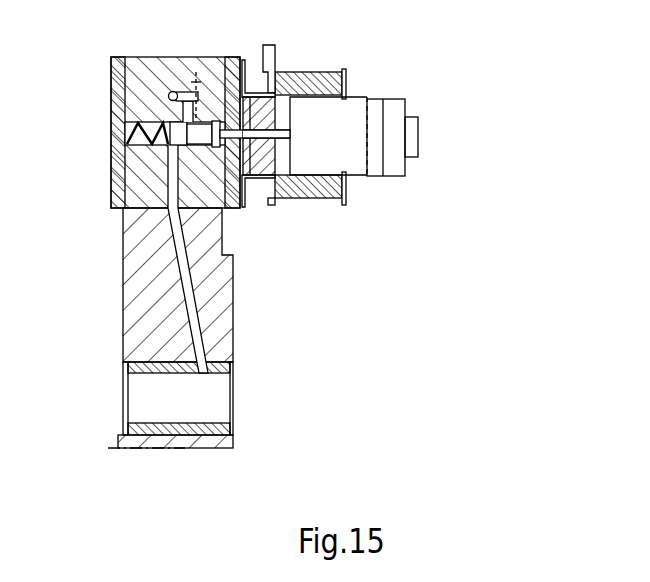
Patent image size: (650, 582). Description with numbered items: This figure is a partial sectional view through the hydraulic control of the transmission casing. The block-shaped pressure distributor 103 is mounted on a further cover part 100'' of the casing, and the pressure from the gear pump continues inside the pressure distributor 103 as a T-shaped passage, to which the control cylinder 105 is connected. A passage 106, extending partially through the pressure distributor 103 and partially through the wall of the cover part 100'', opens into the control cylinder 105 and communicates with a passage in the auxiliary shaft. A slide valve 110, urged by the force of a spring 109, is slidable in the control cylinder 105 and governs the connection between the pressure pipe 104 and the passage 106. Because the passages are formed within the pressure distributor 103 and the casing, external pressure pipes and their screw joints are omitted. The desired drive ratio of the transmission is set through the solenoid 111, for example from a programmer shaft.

The cover part 100'' is at (210, 328).
The pressure distributor 103 is at (130, 85).
The pressure pipe 104 is at (173, 90).
The control cylinder 105 is at (201, 123).
The passage 106 is at (193, 280).
The spring 109 is at (124, 125).
The slide valve 110 is at (176, 127).
The solenoid 111 is at (319, 73).